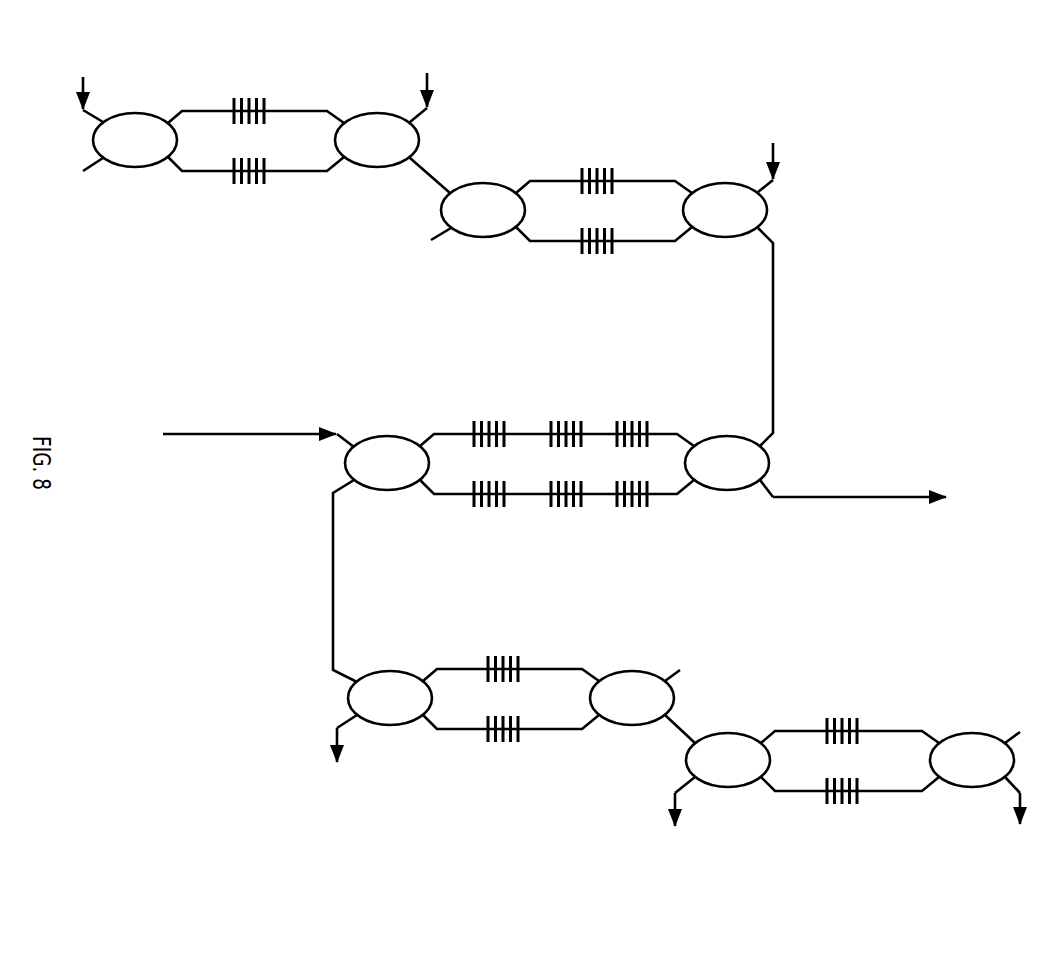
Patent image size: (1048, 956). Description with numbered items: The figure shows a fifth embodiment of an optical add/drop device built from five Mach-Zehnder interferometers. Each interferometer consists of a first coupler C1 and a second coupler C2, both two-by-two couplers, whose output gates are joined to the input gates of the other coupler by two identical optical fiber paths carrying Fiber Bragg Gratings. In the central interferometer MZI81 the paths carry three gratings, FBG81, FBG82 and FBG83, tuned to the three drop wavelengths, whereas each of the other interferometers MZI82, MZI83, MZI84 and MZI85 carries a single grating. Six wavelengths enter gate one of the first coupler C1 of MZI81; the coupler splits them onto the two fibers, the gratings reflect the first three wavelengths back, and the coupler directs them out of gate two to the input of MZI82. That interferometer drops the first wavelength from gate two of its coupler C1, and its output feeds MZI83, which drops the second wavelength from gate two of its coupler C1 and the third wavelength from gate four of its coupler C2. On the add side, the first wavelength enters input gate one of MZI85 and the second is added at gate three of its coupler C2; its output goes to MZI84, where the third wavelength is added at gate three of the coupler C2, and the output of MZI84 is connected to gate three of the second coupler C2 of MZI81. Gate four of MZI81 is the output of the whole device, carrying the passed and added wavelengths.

The first Mach-Zehnder interferometer MZI81 is at (426, 397).
The second Mach-Zehnder interferometer MZI82 is at (456, 740).
The third Mach-Zehnder interferometer MZI83 is at (928, 697).
The fourth Mach-Zehnder interferometer MZI84 is at (690, 140).
The fifth Mach-Zehnder interferometer MZI85 is at (314, 101).
The Fiber Bragg Grating for λ1 FBG81 is at (498, 581).
The Fiber Bragg Grating for λ2 FBG82 is at (548, 451).
The Fiber Bragg Grating for λ3 FBG83 is at (616, 337).
The first coupler C1 is at (431, 450).
The second coupler C2 is at (674, 450).